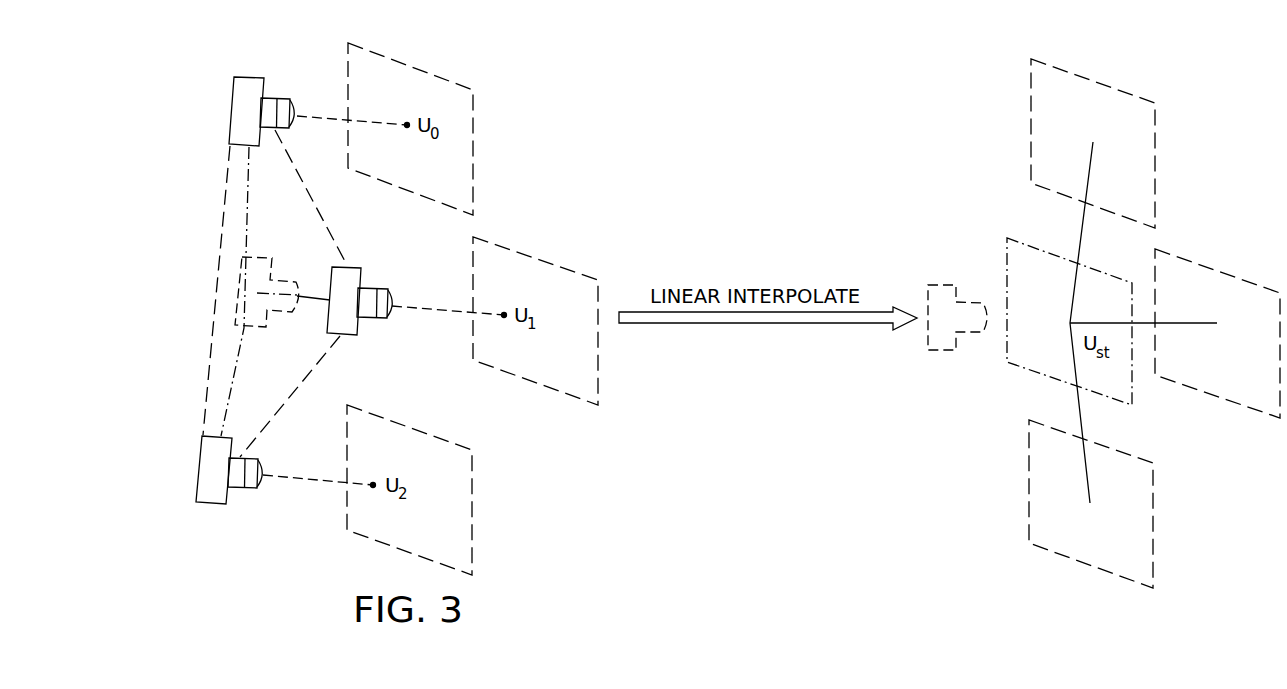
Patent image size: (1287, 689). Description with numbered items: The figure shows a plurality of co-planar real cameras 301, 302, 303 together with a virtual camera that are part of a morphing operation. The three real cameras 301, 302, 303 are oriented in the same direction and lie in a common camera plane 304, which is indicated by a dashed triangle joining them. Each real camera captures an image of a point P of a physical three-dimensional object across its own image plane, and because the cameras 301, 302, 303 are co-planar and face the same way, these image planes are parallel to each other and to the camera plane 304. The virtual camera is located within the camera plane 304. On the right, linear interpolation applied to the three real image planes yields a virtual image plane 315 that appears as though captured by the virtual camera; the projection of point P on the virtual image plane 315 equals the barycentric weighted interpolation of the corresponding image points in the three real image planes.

The co-planar camera 301 is at (233, 102).
The co-planar camera 302 is at (363, 276).
The co-planar camera 303 is at (196, 487).
The camera plane 304 is at (218, 263).
The virtual image plane 315 is at (1132, 387).